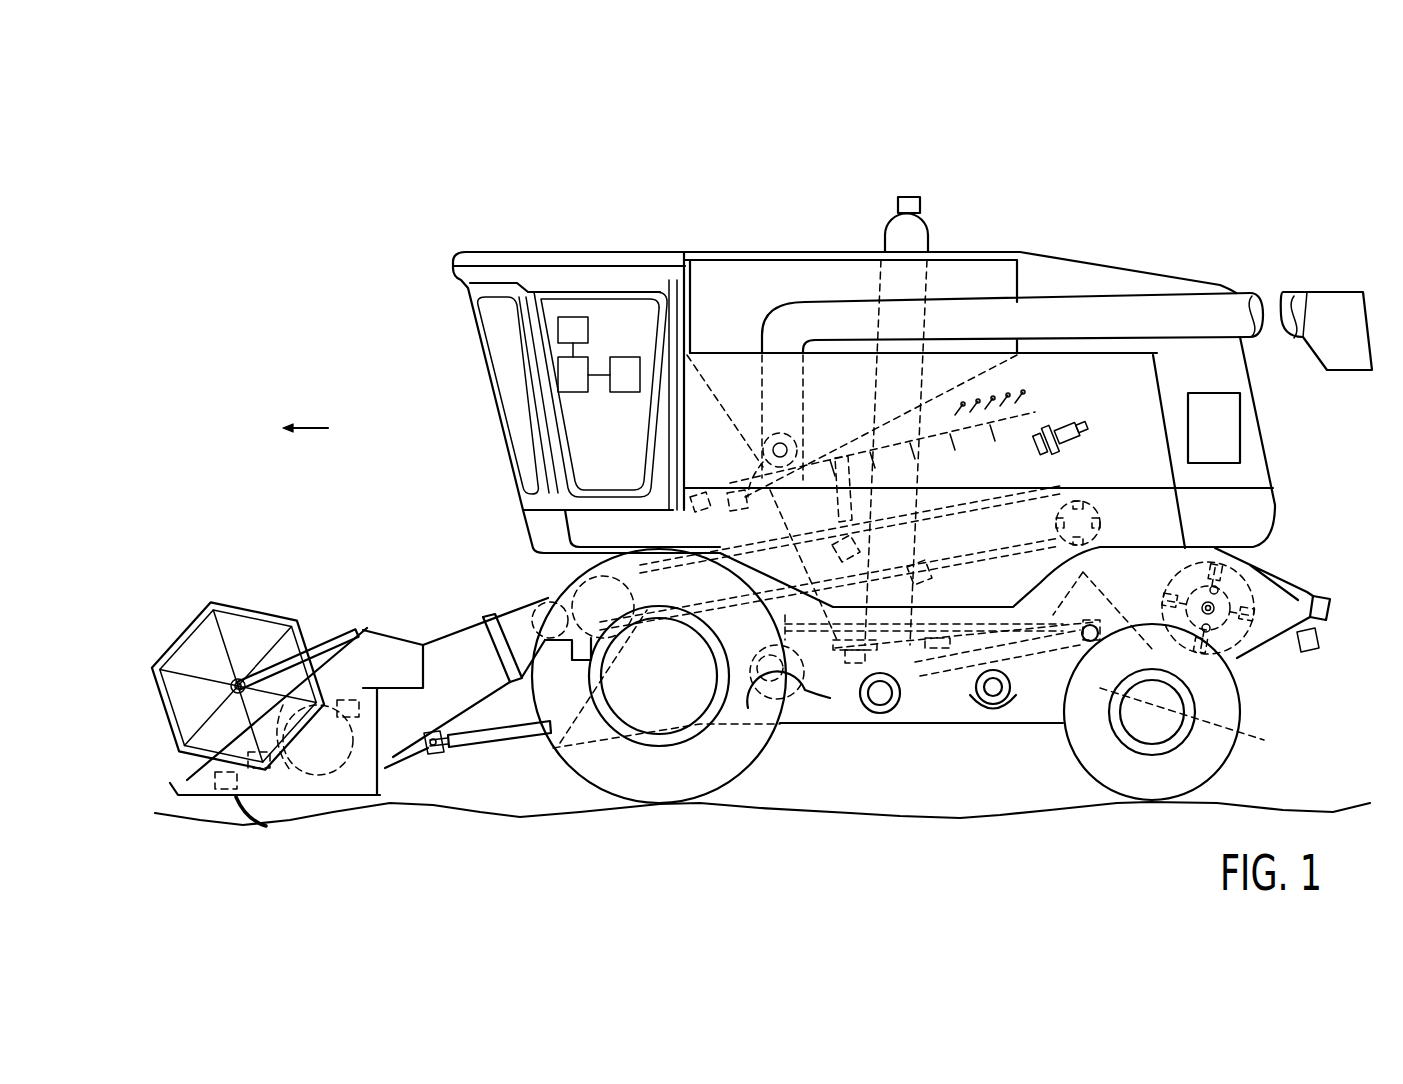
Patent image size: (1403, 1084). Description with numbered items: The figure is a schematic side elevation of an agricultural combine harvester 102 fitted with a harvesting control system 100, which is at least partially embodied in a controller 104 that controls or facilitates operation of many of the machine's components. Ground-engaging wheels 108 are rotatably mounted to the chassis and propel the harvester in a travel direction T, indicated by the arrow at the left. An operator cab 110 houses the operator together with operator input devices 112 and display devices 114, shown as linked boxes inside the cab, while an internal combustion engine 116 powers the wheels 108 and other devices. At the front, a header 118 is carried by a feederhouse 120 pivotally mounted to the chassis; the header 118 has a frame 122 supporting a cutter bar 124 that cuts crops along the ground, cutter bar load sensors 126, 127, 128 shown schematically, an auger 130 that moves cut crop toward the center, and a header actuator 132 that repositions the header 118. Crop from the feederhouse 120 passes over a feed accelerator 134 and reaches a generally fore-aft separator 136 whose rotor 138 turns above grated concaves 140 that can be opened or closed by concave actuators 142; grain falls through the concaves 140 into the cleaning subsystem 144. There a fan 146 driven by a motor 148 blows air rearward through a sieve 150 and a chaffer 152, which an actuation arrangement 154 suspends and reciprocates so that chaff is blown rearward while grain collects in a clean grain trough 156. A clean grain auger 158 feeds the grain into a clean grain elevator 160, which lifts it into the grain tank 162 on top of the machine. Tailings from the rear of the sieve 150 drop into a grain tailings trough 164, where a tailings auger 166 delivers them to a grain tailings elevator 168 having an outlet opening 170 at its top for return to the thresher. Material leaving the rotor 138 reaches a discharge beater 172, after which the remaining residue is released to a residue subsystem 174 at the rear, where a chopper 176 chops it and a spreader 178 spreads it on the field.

The harvesting control system 100 is at (428, 352).
The agricultural combine harvester 102 is at (655, 147).
The controller 104 is at (574, 393).
The ground-engaging wheels 108 is at (613, 777).
The operator cab 110 is at (507, 251).
The operator input devices 112 is at (625, 357).
The display devices 114 is at (577, 318).
The internal combustion engine 116 is at (1240, 425).
The header 118 is at (218, 592).
The feederhouse 120 is at (430, 640).
The frame 122 is at (393, 770).
The cutter bar 124 is at (193, 787).
The cutter bar load sensor 126 is at (223, 797).
The cutter bar load sensor 127 is at (278, 770).
The cutter bar load sensor 128 is at (347, 695).
The auger 130 is at (327, 780).
The header actuator 132 is at (478, 745).
The feed accelerator 134 is at (544, 598).
The separator 136 is at (1020, 382).
The rotor 138 is at (1030, 408).
The concaves 140 is at (962, 540).
The concave actuators 142 is at (952, 487).
The cleaning subsystem 144 is at (890, 732).
The fan 146 is at (800, 700).
The motor 148 is at (740, 730).
The sieve 150 is at (842, 700).
The chaffer 152 is at (1083, 572).
The actuation arrangement 154 is at (1202, 723).
The clean grain trough 156 is at (940, 700).
The clean grain auger 158 is at (900, 705).
The clean grain elevator 160 is at (883, 283).
The grain tank 162 is at (757, 252).
The grain tailings trough 164 is at (1025, 700).
The tailings auger 166 is at (978, 700).
The grain tailings elevator 168 is at (805, 460).
The outlet opening 170 is at (712, 505).
The discharge beater 172 is at (1100, 513).
The residue subsystem 174 is at (1313, 588).
The chopper 176 is at (1278, 575).
The spreader 178 is at (1330, 600).
The travel direction T is at (328, 428).